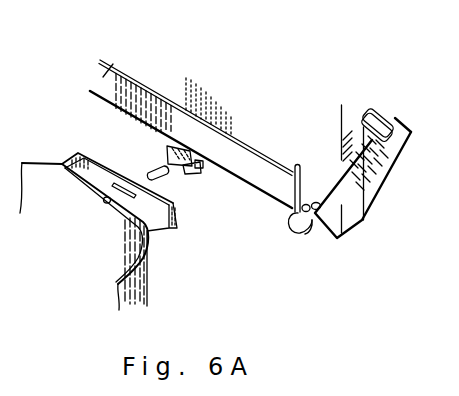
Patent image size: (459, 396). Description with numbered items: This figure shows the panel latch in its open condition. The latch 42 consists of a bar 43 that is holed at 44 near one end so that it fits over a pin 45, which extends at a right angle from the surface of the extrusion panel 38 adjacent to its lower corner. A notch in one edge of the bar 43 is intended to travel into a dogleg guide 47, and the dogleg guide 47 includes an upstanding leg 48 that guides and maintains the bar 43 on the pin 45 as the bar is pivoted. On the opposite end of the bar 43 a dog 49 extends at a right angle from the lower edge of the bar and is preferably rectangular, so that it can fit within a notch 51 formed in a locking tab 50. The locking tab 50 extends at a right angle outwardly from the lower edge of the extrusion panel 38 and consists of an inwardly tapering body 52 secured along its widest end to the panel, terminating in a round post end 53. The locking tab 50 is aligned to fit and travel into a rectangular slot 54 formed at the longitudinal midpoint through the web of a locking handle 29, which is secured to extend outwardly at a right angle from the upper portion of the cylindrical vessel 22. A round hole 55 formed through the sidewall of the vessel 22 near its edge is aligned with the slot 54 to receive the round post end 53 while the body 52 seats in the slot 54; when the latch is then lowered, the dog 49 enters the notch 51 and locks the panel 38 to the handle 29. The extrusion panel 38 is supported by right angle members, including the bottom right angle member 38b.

The cylindrical vessel 22 is at (143, 280).
The locking handle 29 is at (170, 233).
The extrusion panel 38 is at (317, 134).
The bottom right angle member 38b is at (109, 74).
The latch 42 is at (283, 92).
The bar 43 is at (388, 179).
The hole 44 is at (362, 221).
The pin 45 is at (313, 236).
The dogleg guide 47 is at (288, 214).
The upstanding leg 48 is at (280, 203).
The dog 49 is at (381, 110).
The locking tab 50 is at (167, 135).
The notch 51 is at (190, 164).
The inwardly tapering body 52 is at (190, 150).
The round post end 53 is at (158, 165).
The rectangular slot 54 is at (93, 152).
The round hole 55 is at (103, 200).